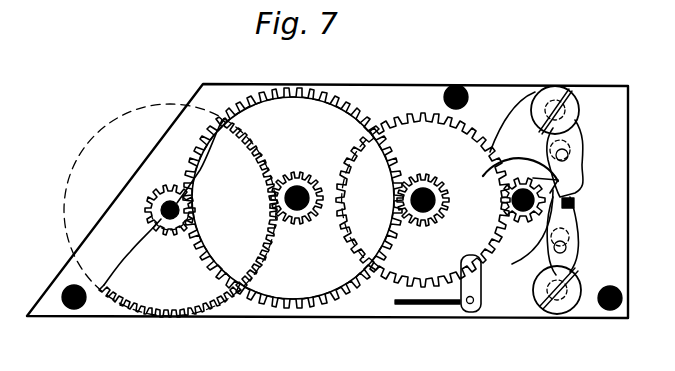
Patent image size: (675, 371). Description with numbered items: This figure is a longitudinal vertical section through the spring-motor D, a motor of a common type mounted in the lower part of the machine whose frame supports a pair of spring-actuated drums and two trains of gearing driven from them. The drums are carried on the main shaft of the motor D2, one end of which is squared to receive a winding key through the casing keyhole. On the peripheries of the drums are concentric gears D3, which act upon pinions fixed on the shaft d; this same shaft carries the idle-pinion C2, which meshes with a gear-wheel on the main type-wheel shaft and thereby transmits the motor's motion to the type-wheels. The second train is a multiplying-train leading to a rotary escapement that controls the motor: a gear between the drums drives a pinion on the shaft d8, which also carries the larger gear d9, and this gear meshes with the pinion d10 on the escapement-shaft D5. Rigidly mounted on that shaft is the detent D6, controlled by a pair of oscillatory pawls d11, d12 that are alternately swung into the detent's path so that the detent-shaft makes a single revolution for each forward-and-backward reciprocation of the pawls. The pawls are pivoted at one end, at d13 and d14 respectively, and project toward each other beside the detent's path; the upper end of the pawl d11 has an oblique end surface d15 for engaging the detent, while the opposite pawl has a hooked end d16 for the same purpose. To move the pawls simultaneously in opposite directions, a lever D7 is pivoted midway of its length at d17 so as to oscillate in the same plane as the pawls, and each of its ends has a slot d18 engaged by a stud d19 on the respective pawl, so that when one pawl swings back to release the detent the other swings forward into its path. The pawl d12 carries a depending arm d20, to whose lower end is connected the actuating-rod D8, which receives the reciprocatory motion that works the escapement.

The spring-motor D is at (413, 66).
The shaft d is at (162, 212).
The idle-pinion C2 is at (188, 217).
The main shaft of the motor D2 is at (298, 212).
The concentric gears D3 is at (347, 296).
The shaft d8 is at (421, 188).
The larger gear d9 is at (423, 200).
The pinion d10 is at (502, 212).
The escapement-shaft D5 is at (498, 188).
The detent D6 is at (520, 208).
The lever D7 is at (527, 233).
The actuating-rod D8 is at (428, 307).
The depending arm d20 is at (473, 288).
The pivot d14 is at (557, 90).
The pivot d13 is at (552, 312).
The oscillatory pawl d12 is at (582, 175).
The oscillatory pawl d11 is at (578, 245).
The pivot of lever d17 is at (574, 204).
The studs d19 is at (572, 150).
The slots d18 is at (578, 157).
The hooked end d16 is at (580, 193).
The oblique end surface d15 is at (573, 208).